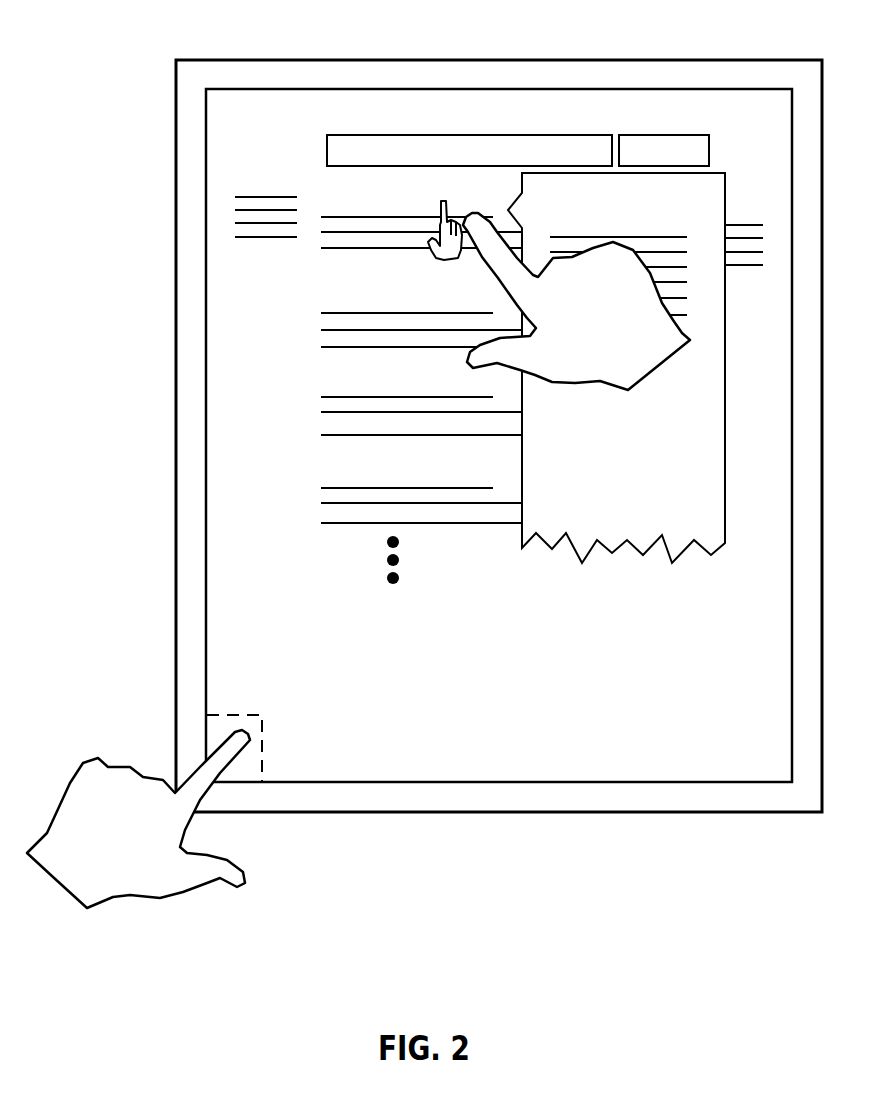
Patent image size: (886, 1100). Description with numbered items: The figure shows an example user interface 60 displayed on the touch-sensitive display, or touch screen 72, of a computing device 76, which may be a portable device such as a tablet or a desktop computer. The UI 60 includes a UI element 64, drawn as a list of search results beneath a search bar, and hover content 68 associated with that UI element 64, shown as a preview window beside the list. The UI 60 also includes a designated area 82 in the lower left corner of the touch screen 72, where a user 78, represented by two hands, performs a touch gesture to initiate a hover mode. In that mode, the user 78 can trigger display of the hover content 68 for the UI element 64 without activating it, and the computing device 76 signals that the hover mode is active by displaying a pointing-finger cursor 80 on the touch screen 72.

The user interface 60 is at (617, 112).
The UI element 64 is at (316, 198).
The hover content 68 is at (706, 198).
The touch-sensitive display 72 is at (746, 88).
The computing device 76 is at (162, 58).
The user 78 is at (606, 327).
The cursor 80 is at (430, 256).
The designated area 82 is at (287, 738).